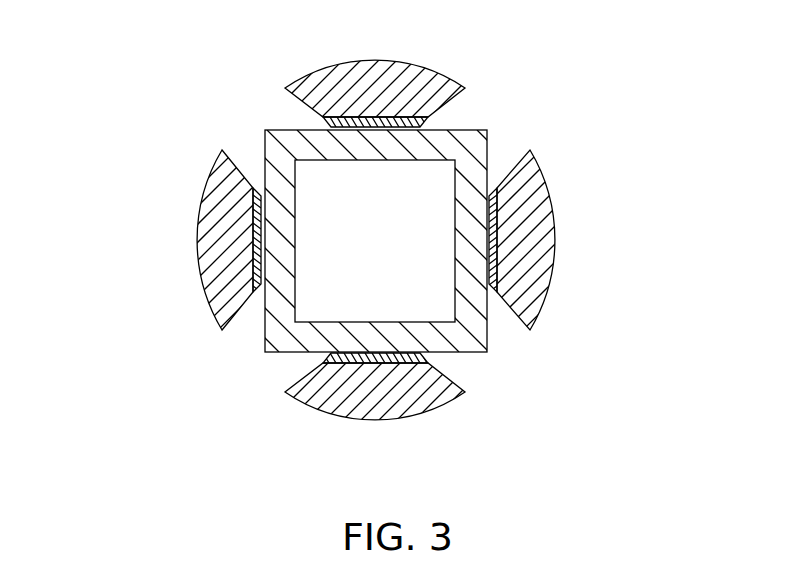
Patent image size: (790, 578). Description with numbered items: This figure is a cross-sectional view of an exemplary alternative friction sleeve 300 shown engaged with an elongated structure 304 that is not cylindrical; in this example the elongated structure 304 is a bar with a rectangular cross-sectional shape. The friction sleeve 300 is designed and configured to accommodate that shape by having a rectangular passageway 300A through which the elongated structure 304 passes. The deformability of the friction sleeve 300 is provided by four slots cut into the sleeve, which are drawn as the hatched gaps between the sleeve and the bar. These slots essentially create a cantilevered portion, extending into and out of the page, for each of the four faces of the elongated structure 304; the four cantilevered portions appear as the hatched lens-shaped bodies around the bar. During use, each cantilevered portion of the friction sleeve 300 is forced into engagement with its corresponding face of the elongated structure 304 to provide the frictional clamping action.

The friction sleeve 300 is at (460, 41).
The rectangular passageway 300A is at (380, 130).
The elongated structure 304 is at (264, 345).